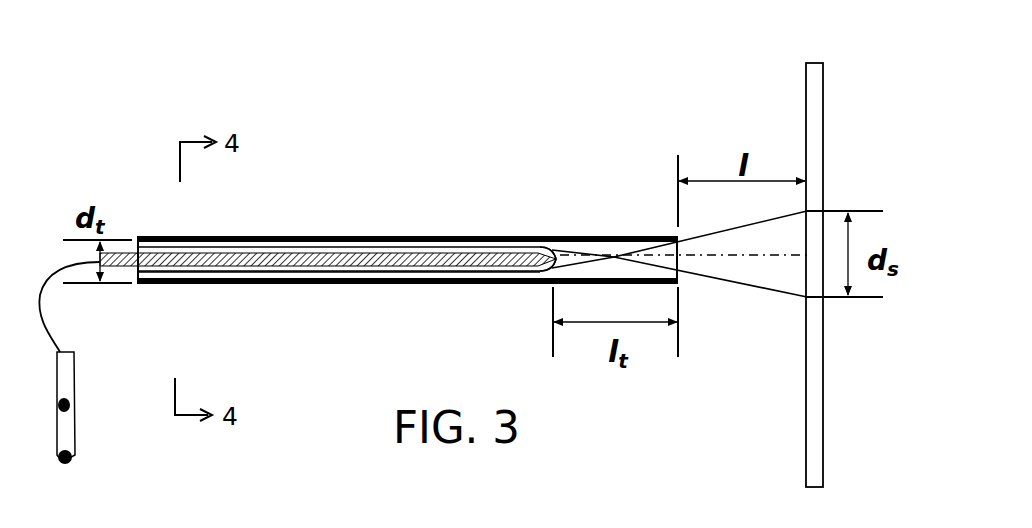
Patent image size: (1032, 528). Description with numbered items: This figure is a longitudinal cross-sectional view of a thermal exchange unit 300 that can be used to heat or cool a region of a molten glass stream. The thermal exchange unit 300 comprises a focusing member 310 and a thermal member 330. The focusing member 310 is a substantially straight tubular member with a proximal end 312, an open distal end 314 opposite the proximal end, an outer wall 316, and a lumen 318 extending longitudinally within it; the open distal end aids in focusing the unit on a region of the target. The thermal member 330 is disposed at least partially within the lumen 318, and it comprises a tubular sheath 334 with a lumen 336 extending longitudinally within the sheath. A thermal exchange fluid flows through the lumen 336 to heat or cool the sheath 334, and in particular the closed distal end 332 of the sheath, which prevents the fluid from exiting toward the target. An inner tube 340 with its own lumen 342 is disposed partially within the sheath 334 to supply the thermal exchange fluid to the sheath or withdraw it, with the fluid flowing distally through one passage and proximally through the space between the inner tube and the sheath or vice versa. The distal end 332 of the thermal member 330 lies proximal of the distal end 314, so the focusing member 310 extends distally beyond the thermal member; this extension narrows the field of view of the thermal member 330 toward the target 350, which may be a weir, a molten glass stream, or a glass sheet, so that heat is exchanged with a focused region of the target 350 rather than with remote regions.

The thermal exchange unit 300 is at (478, 137).
The focusing member 310 is at (380, 236).
The proximal end 312 is at (145, 236).
The distal end 314 is at (675, 230).
The outer wall 316 is at (240, 236).
The lumen 318 is at (612, 247).
The thermal member 330 is at (328, 312).
The distal end of thermal member 332 is at (543, 284).
The tubular sheath 334 is at (345, 286).
The lumen of sheath 336 is at (375, 286).
The inner tube 340 is at (178, 288).
The lumen of inner tube 342 is at (267, 286).
The target 350 is at (822, 63).